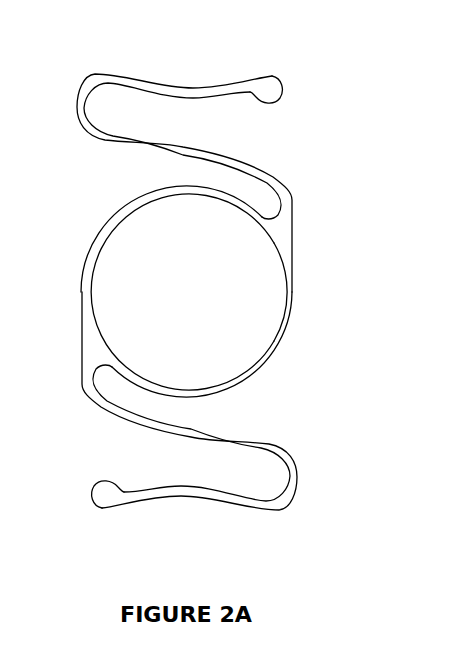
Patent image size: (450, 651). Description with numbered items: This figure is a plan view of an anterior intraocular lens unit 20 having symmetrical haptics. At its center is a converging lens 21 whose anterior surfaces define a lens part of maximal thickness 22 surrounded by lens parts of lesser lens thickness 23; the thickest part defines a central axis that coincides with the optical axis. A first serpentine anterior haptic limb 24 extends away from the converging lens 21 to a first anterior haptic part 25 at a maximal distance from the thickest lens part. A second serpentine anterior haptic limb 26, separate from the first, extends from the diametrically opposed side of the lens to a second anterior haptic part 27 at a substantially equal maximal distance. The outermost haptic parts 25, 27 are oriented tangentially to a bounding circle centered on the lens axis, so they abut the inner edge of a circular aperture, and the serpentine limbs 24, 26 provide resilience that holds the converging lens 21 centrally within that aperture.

The anterior intraocular lens unit 20 is at (448, 232).
The converging lens 21 is at (88, 234).
The lens part of maximal thickness 22 is at (194, 286).
The lens parts of lesser lens thickness 23 is at (279, 327).
The first serpentine anterior haptic limb 24 is at (268, 173).
The first anterior haptic part 25 is at (97, 68).
The second serpentine anterior haptic limb 26 is at (260, 442).
The second anterior haptic part 27 is at (91, 504).